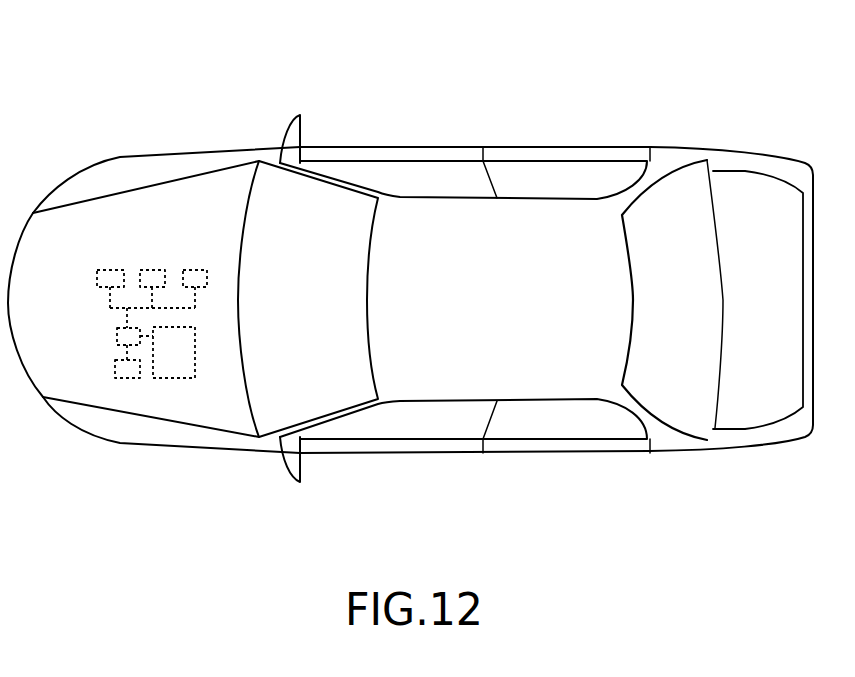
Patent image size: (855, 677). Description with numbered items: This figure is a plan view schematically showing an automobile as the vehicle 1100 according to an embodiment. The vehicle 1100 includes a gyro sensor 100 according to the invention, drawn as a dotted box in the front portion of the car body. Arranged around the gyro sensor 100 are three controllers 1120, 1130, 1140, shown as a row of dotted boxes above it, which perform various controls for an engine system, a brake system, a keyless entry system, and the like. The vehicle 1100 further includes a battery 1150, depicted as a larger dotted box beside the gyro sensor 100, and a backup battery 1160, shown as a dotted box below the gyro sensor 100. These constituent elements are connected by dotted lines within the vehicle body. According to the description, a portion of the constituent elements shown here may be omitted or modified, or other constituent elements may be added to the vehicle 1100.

The vehicle 1100 is at (431, 76).
The gyro sensor 100 is at (118, 333).
The controller 1120 is at (112, 268).
The controller 1130 is at (148, 268).
The controller 1140 is at (198, 268).
The battery 1150 is at (182, 378).
The backup battery 1160 is at (115, 370).